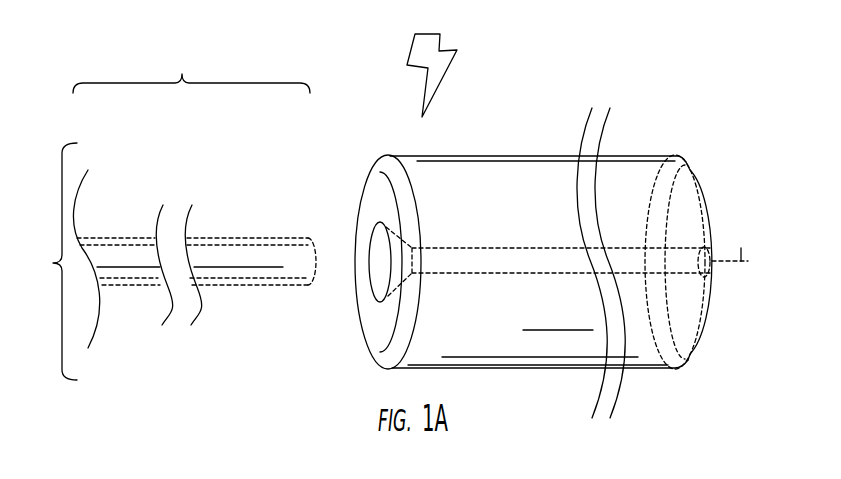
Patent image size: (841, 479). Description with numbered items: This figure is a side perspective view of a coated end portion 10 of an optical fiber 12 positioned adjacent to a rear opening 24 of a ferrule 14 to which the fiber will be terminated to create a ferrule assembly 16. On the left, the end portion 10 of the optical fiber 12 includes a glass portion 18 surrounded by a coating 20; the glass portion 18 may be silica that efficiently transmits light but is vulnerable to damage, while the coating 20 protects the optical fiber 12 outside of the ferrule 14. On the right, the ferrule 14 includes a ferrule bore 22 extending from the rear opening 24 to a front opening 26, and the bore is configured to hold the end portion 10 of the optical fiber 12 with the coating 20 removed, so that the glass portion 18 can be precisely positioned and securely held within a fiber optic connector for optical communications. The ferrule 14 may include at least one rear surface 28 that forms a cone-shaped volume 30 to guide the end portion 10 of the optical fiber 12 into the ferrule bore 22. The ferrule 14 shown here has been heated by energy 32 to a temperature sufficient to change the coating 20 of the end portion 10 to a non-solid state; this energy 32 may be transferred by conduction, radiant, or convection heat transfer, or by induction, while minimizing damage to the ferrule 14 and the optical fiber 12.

The coated end portion 10 is at (191, 71).
The optical fiber 12 is at (262, 288).
The ferrule 14 is at (487, 180).
The ferrule assembly 16 is at (53, 263).
The glass portion 18 is at (133, 252).
The coating 20 is at (247, 238).
The ferrule bore 22 is at (537, 248).
The rear opening 24 is at (414, 283).
The front opening 26 is at (717, 248).
The rear surface 28 is at (378, 182).
The cone-shaped volume 30 is at (382, 240).
The energy 32 is at (447, 72).